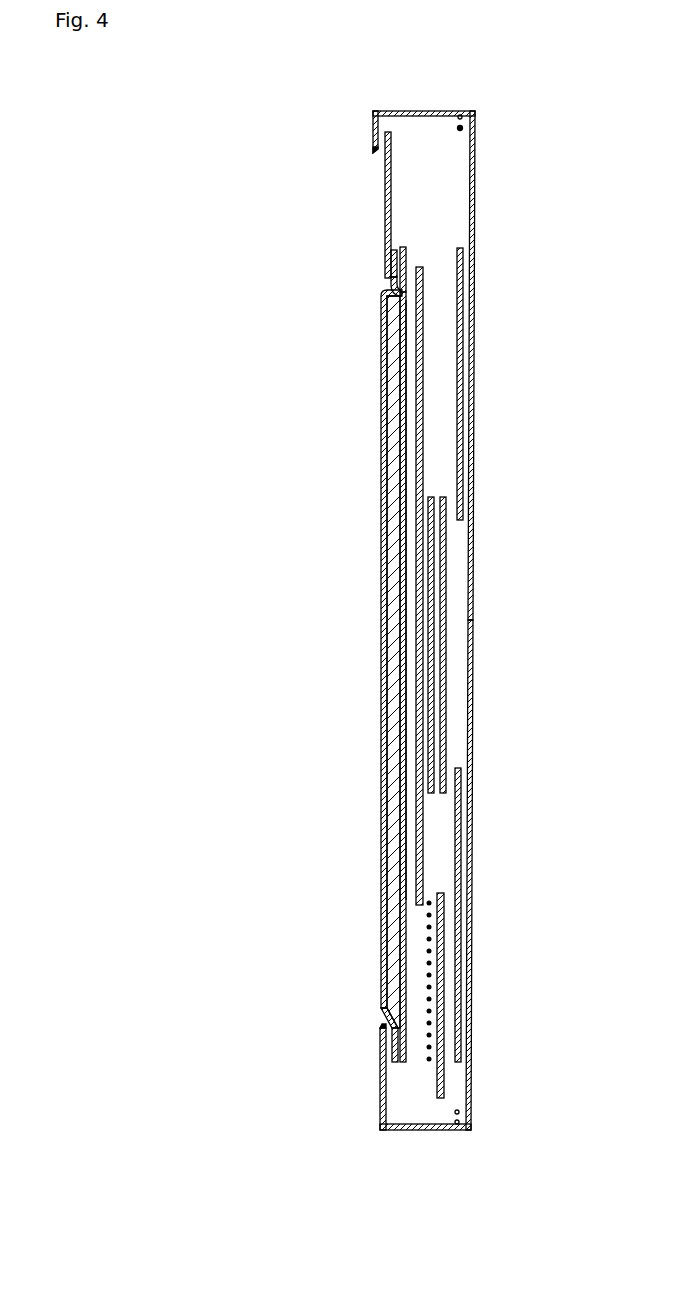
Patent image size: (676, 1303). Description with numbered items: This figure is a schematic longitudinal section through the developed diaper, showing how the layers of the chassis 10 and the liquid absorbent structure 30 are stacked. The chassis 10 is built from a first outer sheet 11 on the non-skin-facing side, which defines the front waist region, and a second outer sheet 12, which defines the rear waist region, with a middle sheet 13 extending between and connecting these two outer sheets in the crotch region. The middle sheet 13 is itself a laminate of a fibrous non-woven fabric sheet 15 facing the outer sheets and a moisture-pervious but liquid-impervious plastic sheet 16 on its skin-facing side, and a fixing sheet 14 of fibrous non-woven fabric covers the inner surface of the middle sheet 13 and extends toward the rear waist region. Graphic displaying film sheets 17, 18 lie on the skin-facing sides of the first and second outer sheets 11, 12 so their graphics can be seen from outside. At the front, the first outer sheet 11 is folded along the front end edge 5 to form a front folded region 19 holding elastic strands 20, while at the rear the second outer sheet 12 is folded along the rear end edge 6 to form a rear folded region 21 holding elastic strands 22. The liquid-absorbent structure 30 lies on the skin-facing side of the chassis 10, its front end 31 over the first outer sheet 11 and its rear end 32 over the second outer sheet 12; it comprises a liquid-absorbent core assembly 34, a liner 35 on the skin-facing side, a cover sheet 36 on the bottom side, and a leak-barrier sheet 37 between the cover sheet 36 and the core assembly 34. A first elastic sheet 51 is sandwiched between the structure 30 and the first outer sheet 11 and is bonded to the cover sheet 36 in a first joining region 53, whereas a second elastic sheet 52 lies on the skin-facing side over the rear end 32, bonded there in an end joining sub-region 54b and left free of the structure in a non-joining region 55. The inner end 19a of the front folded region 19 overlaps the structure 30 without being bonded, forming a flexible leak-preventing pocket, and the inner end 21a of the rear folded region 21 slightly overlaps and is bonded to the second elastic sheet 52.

The front end edge 5 is at (425, 1130).
The rear end edge 6 is at (437, 111).
The chassis 10 is at (435, 618).
The first outer sheet 11 is at (473, 915).
The second outer sheet 12 is at (477, 203).
The middle sheet 13 is at (497, 645).
The fixing sheet 14 is at (425, 390).
The fibrous non-woven fabric sheet 15 is at (520, 552).
The plastic sheet 16 is at (434, 557).
The graphic displaying film sheet 17 is at (461, 975).
The graphic displaying film sheet 18 is at (463, 342).
The front folded region 19 is at (380, 1090).
The inner end of the front folded region 19a is at (380, 1024).
The elastic strands 20 is at (460, 1122).
The rear folded region 21 is at (372, 142).
The inner end of the rear folded region 21a is at (372, 152).
The elastic strands 22 is at (463, 128).
The liquid-absorbent structure 30 is at (406, 638).
The front end 31 is at (393, 1063).
The rear end 32 is at (403, 248).
The liquid-absorbent core assembly 34 is at (393, 387).
The liner 35 is at (380, 423).
The cover sheet 36 is at (410, 427).
The leak-barrier sheet 37 is at (398, 452).
The first elastic sheet 51 is at (444, 1012).
The second elastic sheet 52 is at (385, 222).
The first joining region 53 is at (432, 940).
The end joining sub-region 54b is at (390, 250).
The non-joining region 55 is at (391, 282).